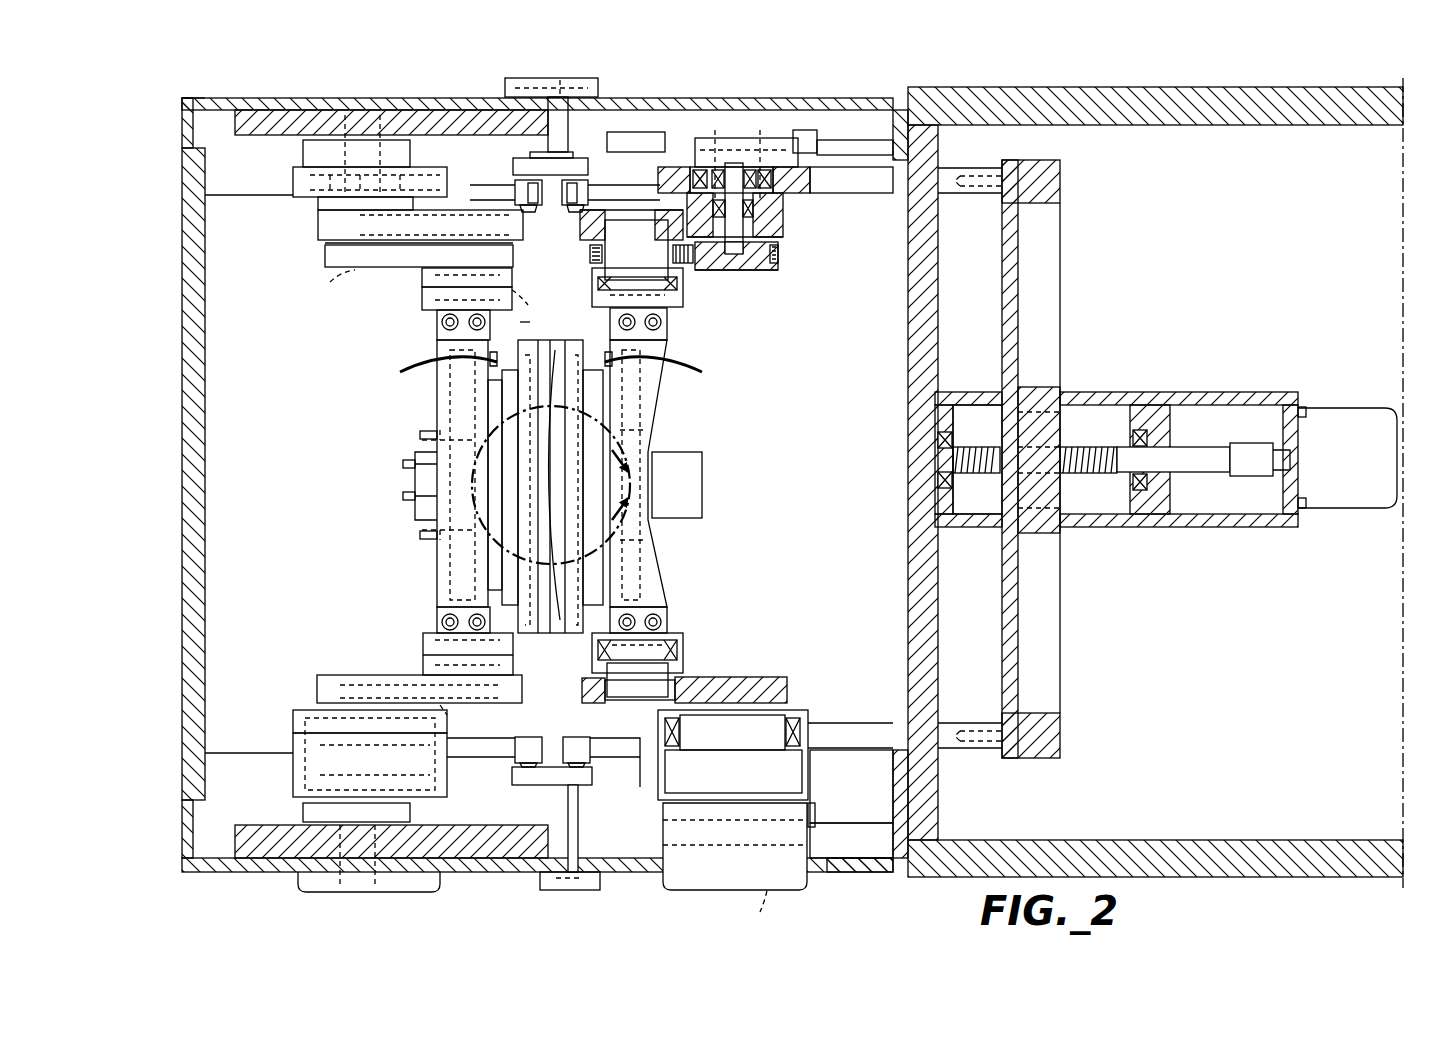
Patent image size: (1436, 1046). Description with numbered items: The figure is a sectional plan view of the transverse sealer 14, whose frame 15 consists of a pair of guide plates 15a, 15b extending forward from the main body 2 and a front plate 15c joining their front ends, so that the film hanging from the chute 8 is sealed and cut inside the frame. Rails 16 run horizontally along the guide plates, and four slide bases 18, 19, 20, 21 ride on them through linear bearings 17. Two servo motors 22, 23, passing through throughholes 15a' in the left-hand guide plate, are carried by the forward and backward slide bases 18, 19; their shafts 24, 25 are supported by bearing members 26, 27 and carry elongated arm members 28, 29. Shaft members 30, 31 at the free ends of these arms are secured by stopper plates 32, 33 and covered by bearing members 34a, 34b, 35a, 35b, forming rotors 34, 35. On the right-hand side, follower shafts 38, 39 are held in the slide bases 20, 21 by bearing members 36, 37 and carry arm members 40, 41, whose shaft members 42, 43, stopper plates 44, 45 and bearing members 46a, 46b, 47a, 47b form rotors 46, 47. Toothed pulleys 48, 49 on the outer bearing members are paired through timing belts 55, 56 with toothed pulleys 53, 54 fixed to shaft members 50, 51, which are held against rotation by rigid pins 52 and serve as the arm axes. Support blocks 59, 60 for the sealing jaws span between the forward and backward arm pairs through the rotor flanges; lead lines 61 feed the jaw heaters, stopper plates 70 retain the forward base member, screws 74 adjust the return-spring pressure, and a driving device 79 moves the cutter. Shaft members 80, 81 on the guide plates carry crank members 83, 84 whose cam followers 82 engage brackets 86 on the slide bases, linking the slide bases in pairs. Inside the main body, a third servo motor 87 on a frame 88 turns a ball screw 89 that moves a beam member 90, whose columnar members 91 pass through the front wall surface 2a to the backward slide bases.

The main body 2 is at (1126, 469).
The front wall surface 2a is at (908, 462).
The chute 8 is at (688, 407).
The transverse sealer 14 is at (206, 98).
The frame 15 is at (506, 485).
The guide plate 15a is at (535, 881).
The throughholes 15a' is at (859, 883).
The guide plate 15b is at (246, 98).
The front plate 15c is at (205, 410).
The rails 16 is at (303, 148).
The linear bearings 17 is at (375, 140).
The slide base 18 is at (293, 768).
The slide base 19 is at (802, 765).
The slide base 20 is at (293, 178).
The slide base 21 is at (815, 185).
The servo motor 22 is at (385, 892).
The servo motor 23 is at (688, 890).
The shaft 24 is at (300, 718).
The shaft 25 is at (790, 712).
The bearing member 26 is at (300, 710).
The bearing member 27 is at (810, 725).
The arm member 28 is at (330, 675).
The arm member 29 is at (780, 677).
The shaft member 30 is at (458, 717).
The shaft member 31 is at (620, 690).
The stopper plate 32 is at (582, 690).
The stopper plate 33 is at (598, 650).
The rotor 34 is at (409, 641).
The bearing member 34a is at (425, 635).
The bearing member 34b is at (423, 660).
The rotor 35 is at (694, 639).
The bearing member 35a is at (680, 633).
The bearing member 35b is at (683, 660).
The bearing member 36 is at (425, 135).
The bearing member 37 is at (668, 167).
The follower shaft 38 is at (293, 184).
The follower shaft 39 is at (783, 210).
The arm member 40 is at (325, 228).
The arm member 41 is at (783, 230).
The shaft member 42 is at (527, 298).
The shaft member 43 is at (592, 290).
The stopper plate 44 is at (496, 322).
The stopper plate 45 is at (610, 322).
The rotor 46 is at (414, 299).
The bearing member 46a is at (422, 300).
The bearing member 46b is at (422, 279).
The rotor 47 is at (691, 289).
The bearing member 47a is at (685, 300).
The bearing member 47b is at (683, 240).
The toothed pulley 48 is at (590, 255).
The toothed pulley 49 is at (620, 260).
The shaft member 50 is at (330, 282).
The shaft member 51 is at (735, 262).
The rigid pins 52 is at (760, 138).
The toothed pulley 53 is at (340, 268).
The toothed pulley 54 is at (755, 268).
The timing belt 55 is at (335, 245).
The timing belt 56 is at (780, 262).
The support block 59 is at (437, 405).
The support block 60 is at (662, 585).
The lead lines 61 is at (410, 364).
The stopper plates 70 is at (400, 465).
The screws 74 is at (420, 435).
The driving device 79 is at (702, 490).
The shaft member 80 is at (548, 890).
The shaft member 81 is at (552, 78).
The cam followers 82 is at (575, 205).
The crank member 83 is at (578, 780).
The crank member 84 is at (575, 158).
The brackets 86 is at (512, 185).
The third servo motor 87 is at (1325, 408).
The frame 88 is at (1222, 392).
The ball screw 89 is at (1066, 430).
The beam member 90 is at (1060, 680).
The columnar members 91 is at (960, 175).